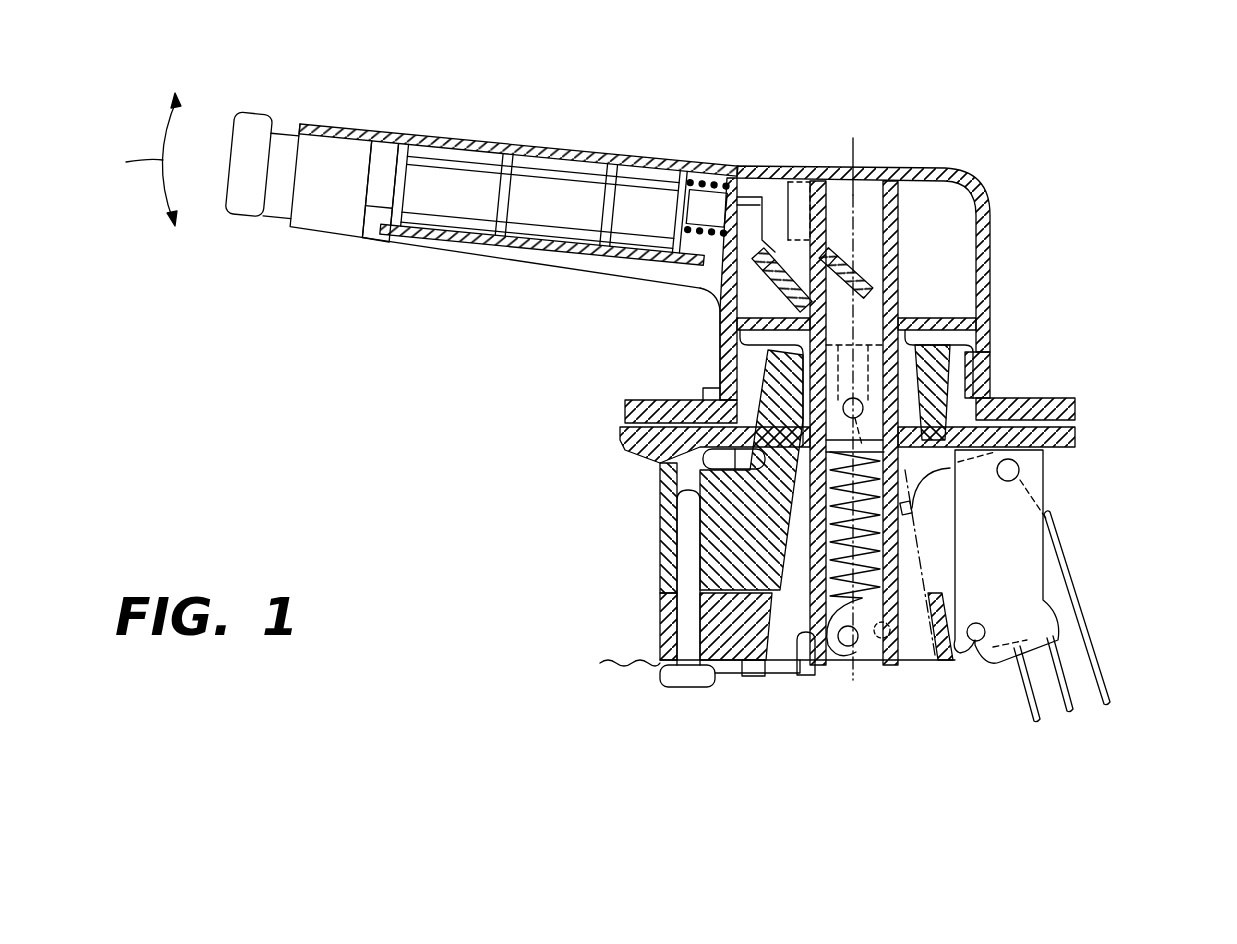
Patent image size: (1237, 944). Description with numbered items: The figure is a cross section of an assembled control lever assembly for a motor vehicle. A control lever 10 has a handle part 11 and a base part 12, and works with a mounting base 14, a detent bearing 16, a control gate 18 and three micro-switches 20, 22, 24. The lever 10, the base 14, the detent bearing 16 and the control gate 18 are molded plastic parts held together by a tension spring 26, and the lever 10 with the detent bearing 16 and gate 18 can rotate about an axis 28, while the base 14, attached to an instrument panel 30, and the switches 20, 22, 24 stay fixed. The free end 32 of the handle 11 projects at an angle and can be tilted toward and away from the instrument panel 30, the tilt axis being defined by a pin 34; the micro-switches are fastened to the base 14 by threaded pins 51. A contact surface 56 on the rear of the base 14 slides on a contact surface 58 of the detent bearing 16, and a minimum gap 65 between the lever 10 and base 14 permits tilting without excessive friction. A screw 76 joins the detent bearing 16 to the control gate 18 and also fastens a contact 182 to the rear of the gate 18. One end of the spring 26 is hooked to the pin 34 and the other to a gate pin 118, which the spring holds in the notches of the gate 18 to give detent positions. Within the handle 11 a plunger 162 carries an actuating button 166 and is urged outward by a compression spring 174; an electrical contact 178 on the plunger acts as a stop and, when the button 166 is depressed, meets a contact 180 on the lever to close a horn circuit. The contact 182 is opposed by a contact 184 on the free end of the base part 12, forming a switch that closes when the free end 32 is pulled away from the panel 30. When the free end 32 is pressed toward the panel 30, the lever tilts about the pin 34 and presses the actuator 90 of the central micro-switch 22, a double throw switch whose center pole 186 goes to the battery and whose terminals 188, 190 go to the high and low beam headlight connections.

The control lever 10 is at (609, 64).
The handle part 11 is at (754, 168).
The base part 12 is at (948, 301).
The mounting base 14 is at (625, 433).
The detent bearing 16 is at (660, 513).
The control gate 18 is at (660, 608).
The micro-switch 20 is at (1093, 608).
The central micro-switch 22 is at (1093, 608).
The micro-switch 24 is at (1037, 590).
The tension spring 26 is at (893, 550).
The axis 28 is at (855, 155).
The instrument panel 30 is at (625, 413).
The free end 32 is at (412, 130).
The pin 34 is at (854, 376).
The threaded pins 51 is at (1020, 470).
The contact surface 56 is at (751, 470).
The contact surface 58 is at (697, 455).
The gap 65 is at (712, 396).
The screw 76 is at (677, 688).
The actuator 90 is at (913, 508).
The gate pin 118 is at (863, 640).
The plunger 162 is at (382, 222).
The actuating button 166 is at (236, 142).
The compression spring 174 is at (716, 182).
The electrical contact 178 is at (772, 268).
The contact 180 is at (834, 262).
The contact 182 is at (752, 680).
The contact 184 is at (809, 676).
The center pole 186 is at (1106, 704).
The terminal 188 is at (1069, 712).
The terminal 190 is at (1037, 723).